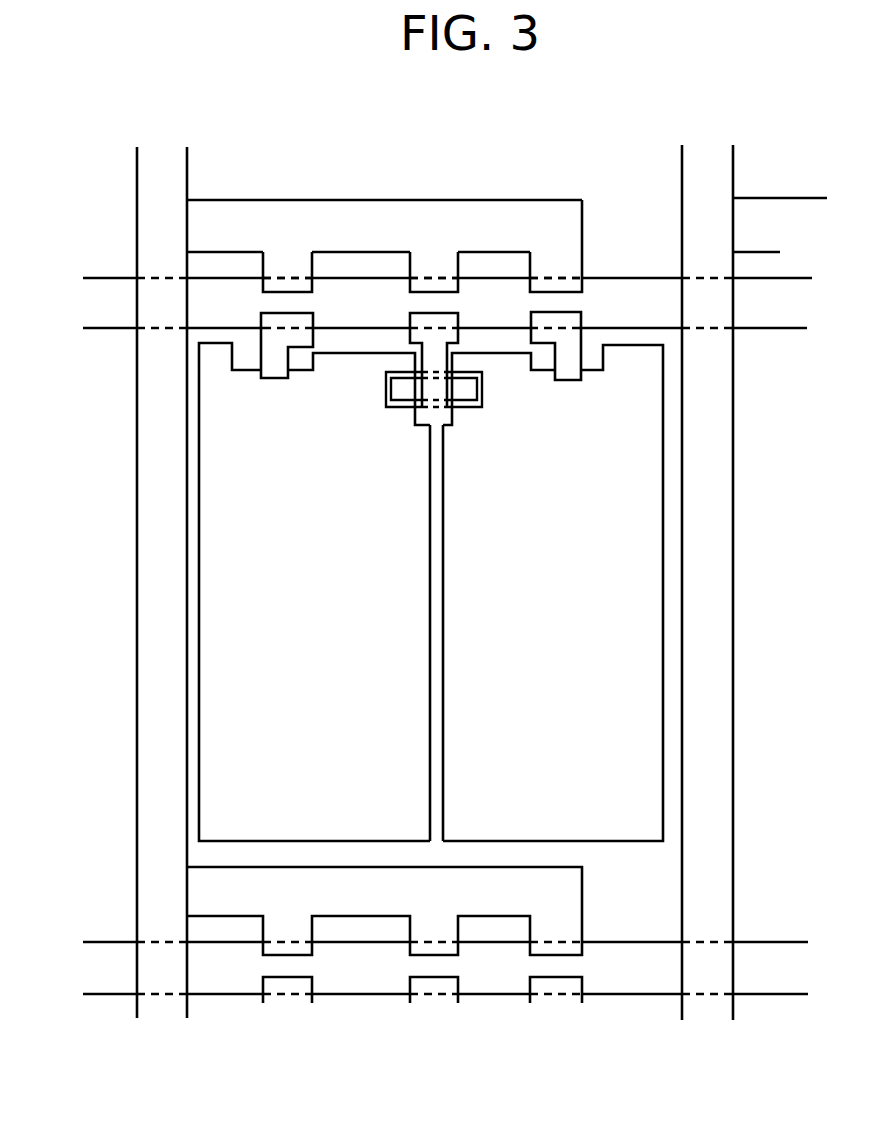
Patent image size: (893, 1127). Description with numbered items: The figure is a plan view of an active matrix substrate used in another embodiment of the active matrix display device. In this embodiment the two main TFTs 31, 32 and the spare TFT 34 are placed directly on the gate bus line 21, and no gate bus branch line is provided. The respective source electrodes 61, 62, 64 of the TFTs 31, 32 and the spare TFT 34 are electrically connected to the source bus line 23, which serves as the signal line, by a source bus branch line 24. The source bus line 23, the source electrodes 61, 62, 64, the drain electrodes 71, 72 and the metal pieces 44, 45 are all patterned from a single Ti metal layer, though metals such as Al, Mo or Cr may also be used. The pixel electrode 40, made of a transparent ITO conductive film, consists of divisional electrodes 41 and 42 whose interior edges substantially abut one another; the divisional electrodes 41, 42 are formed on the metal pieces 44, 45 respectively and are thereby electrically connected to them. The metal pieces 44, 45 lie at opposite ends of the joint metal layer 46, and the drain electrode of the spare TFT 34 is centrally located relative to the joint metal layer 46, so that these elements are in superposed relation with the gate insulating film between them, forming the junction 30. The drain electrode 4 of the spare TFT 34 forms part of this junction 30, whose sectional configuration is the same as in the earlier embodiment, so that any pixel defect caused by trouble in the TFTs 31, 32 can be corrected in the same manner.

The gate bus line 21 is at (103, 302).
The source bus line 23 is at (160, 173).
The source bus branch line 24 is at (405, 213).
The main TFT 31 is at (289, 306).
The spare TFT 34 is at (447, 306).
The main TFT 32 is at (558, 306).
The source electrode 61 is at (273, 270).
The source electrode 64 is at (420, 268).
The source electrode 62 is at (567, 240).
The drain electrode 71 is at (272, 348).
The drain electrode 72 is at (573, 353).
The drain electrode 4 is at (420, 337).
The metal piece 44 is at (407, 397).
The metal piece 45 is at (483, 402).
The joint metal layer 46 is at (483, 386).
The junction 30 is at (467, 411).
The divisional electrode 41 is at (402, 812).
The divisional electrode 42 is at (535, 812).
The pixel electrode 40 is at (431, 630).